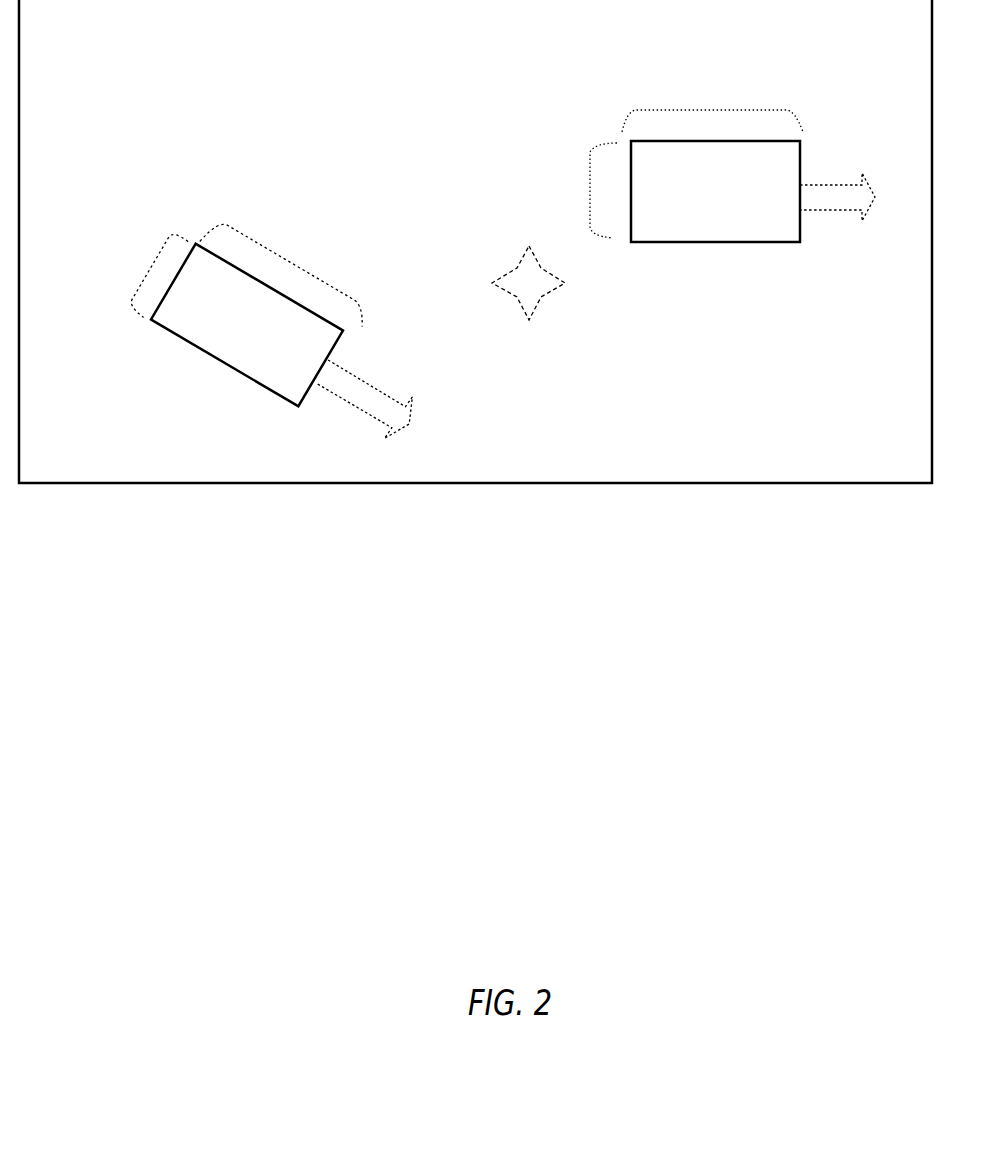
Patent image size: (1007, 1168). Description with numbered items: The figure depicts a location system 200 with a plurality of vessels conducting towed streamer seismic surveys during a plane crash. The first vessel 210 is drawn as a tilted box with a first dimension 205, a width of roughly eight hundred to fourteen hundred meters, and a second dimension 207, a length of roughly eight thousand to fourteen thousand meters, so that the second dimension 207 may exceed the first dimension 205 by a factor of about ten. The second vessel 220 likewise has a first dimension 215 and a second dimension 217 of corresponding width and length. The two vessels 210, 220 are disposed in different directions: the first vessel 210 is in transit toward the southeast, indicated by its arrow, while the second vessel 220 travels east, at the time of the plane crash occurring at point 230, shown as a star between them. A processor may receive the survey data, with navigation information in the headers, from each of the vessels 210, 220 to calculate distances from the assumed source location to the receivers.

The system 200 is at (475, 473).
The first dimension 205 is at (148, 270).
The second dimension 207 is at (297, 262).
The first vessel 210 is at (247, 325).
The first dimension 215 is at (590, 190).
The second dimension 217 is at (715, 110).
The second vessel 220 is at (715, 191).
The point 230 is at (528, 307).